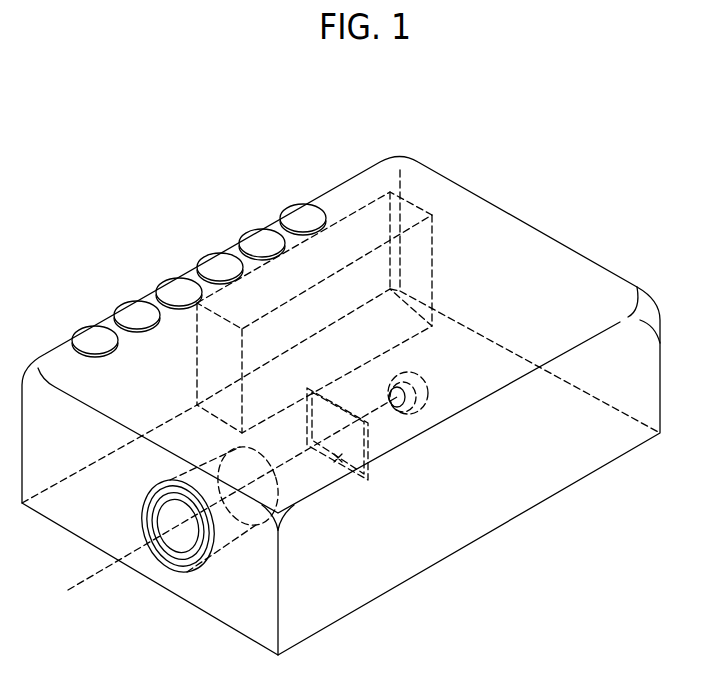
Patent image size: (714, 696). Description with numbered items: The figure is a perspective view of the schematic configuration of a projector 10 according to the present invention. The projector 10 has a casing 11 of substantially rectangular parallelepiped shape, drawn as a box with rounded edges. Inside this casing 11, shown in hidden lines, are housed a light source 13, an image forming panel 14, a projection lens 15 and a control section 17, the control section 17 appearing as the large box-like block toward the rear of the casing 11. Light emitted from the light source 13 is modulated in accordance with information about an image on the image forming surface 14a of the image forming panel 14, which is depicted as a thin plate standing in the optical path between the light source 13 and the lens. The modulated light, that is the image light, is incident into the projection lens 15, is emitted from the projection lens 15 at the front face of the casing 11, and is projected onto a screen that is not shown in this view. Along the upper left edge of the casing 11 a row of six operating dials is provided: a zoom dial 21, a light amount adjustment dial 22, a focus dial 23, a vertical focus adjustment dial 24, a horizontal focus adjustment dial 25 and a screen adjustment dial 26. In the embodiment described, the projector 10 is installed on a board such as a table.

The projector 10 is at (582, 223).
The casing 11 is at (503, 223).
The light source 13 is at (432, 375).
The image forming panel 14 is at (370, 443).
The image forming surface 14a is at (333, 462).
The projection lens 15 is at (182, 543).
The control section 17 is at (412, 205).
The zoom dial 21 is at (88, 337).
The light amount adjustment dial 22 is at (130, 312).
The focus dial 23 is at (173, 287).
The vertical focus adjustment dial 24 is at (217, 262).
The horizontal focus adjustment dial 25 is at (257, 238).
The screen adjustment dial 26 is at (302, 212).